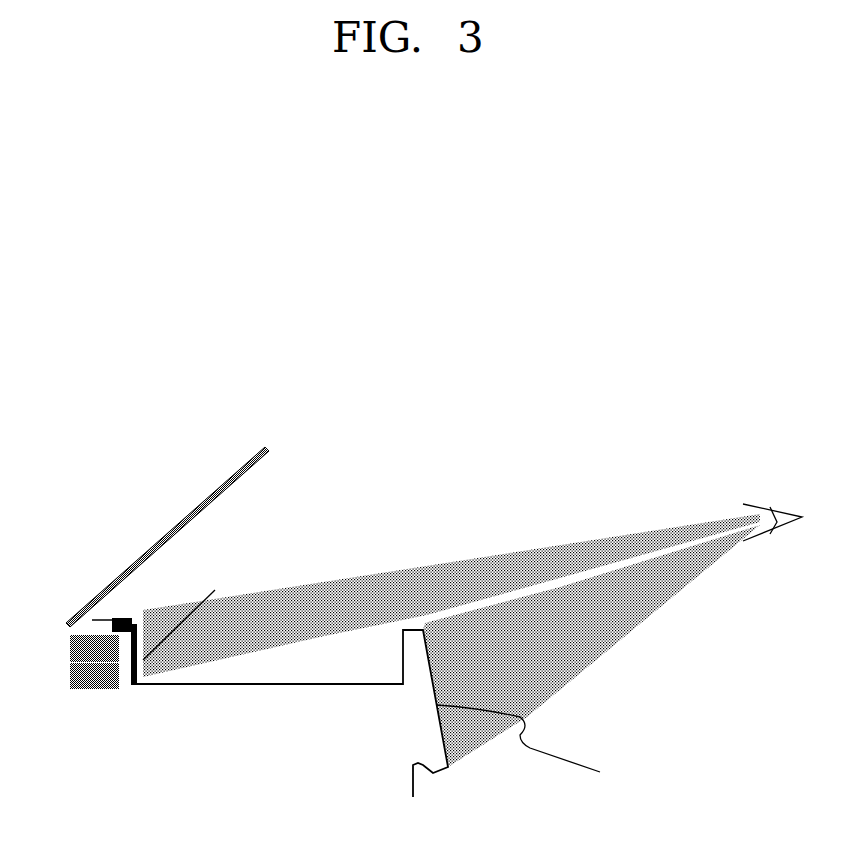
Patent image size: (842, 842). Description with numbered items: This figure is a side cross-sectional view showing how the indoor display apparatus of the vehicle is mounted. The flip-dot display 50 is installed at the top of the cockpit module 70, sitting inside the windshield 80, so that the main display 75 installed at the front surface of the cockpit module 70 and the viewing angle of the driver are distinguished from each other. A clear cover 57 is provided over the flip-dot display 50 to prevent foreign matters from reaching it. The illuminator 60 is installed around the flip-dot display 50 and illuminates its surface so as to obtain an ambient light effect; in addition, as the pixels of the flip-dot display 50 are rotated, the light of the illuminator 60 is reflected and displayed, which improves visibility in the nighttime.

The flip-dot display 50 is at (90, 687).
The clear cover 57 is at (143, 660).
The illuminator 60 is at (132, 613).
The cockpit module 70 is at (303, 730).
The main display 75 is at (535, 750).
The windshield 80 is at (187, 508).